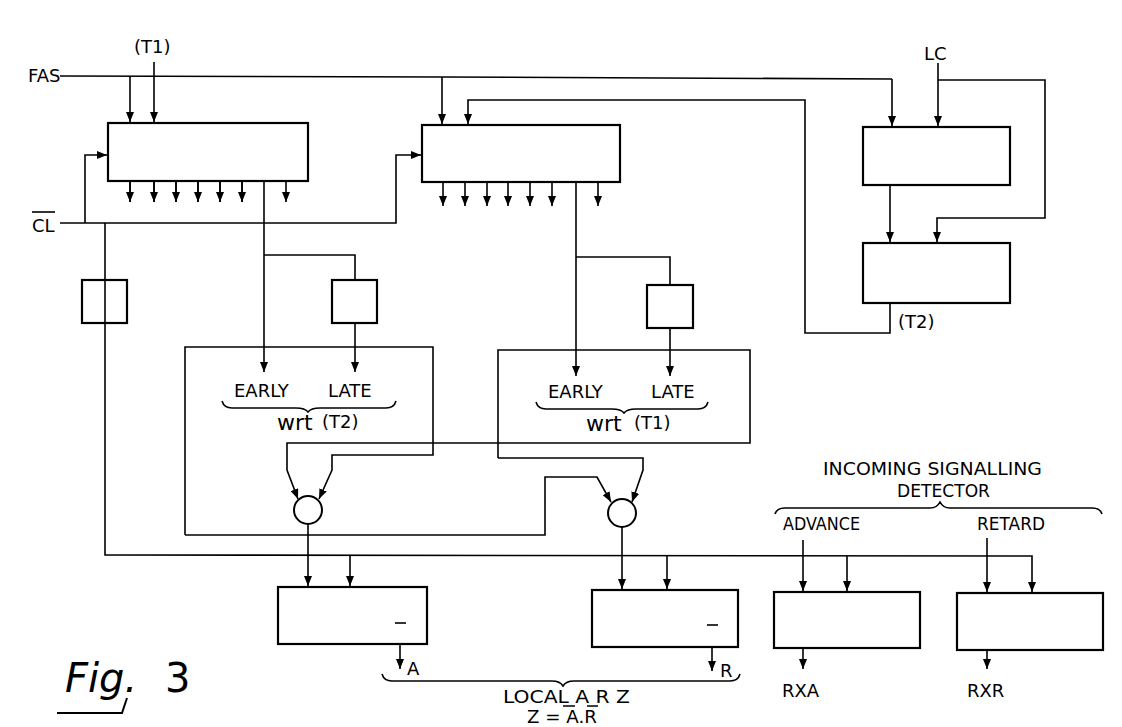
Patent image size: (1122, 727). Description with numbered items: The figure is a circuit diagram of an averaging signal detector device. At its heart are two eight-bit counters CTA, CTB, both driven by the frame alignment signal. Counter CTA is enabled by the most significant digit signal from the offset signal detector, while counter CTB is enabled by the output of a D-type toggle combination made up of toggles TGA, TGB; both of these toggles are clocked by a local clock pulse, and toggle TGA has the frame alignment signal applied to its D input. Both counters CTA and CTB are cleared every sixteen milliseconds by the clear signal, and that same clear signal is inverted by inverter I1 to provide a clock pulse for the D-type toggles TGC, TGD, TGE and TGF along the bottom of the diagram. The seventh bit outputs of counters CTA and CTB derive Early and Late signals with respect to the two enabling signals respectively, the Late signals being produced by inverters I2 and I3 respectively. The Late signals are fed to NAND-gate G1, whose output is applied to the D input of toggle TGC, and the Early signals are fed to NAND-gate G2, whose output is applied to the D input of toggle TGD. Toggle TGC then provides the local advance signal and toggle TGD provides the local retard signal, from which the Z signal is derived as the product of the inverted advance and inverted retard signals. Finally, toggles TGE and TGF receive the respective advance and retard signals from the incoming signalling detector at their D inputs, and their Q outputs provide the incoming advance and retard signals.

The 8 bit counter CTA is at (208, 162).
The 8 bit counter CTB is at (521, 165).
The D-type toggle TGA is at (936, 146).
The D-type toggle TGB is at (936, 263).
The D-type toggle TGC is at (352, 602).
The D-type toggle TGD is at (665, 605).
The D-type toggle TGE is at (847, 606).
The D-type toggle TGF is at (1030, 608).
The inverter I1 is at (104, 301).
The inverter I2 is at (354, 301).
The inverter I3 is at (670, 306).
The NAND-gate G1 is at (326, 510).
The NAND-gate G2 is at (639, 513).